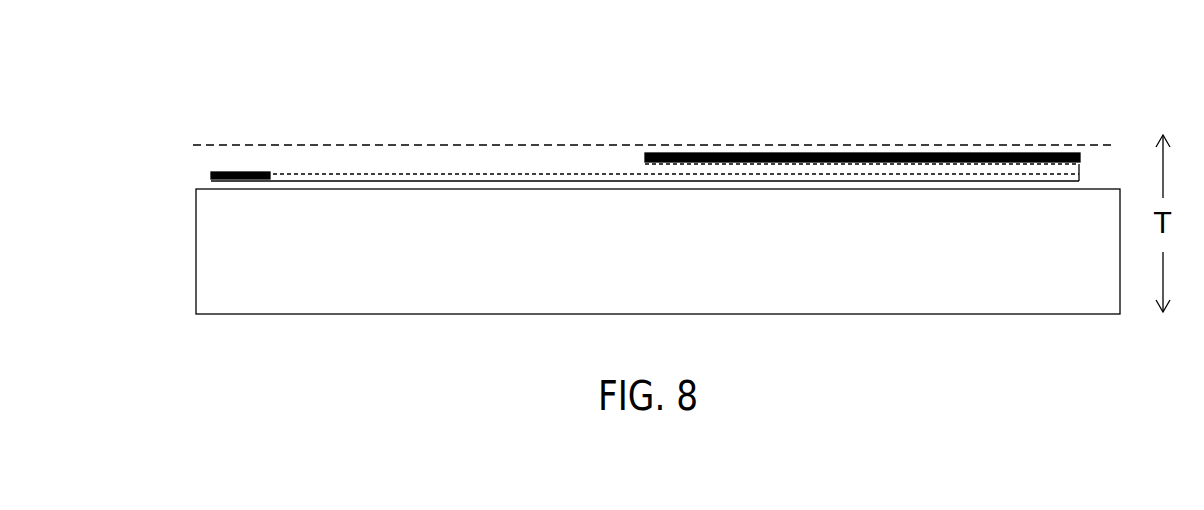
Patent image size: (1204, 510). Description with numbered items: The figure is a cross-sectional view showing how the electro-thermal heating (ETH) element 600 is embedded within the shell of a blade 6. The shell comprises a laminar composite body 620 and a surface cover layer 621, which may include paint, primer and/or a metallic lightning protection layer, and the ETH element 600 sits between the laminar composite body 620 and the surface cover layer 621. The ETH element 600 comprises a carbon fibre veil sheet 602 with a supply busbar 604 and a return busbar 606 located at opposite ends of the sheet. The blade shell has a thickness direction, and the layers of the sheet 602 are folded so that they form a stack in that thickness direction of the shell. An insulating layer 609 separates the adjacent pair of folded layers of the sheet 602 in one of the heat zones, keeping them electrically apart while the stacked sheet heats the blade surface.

The blade 6 is at (908, 128).
The ETH element 600 is at (576, 152).
The carbon fibre veil sheet 602 is at (499, 181).
The supply busbar 604 is at (235, 170).
The return busbar 606 is at (835, 157).
The insulating layer 609 is at (451, 173).
The laminar composite body 620 is at (212, 278).
The surface cover layer 621 is at (377, 145).